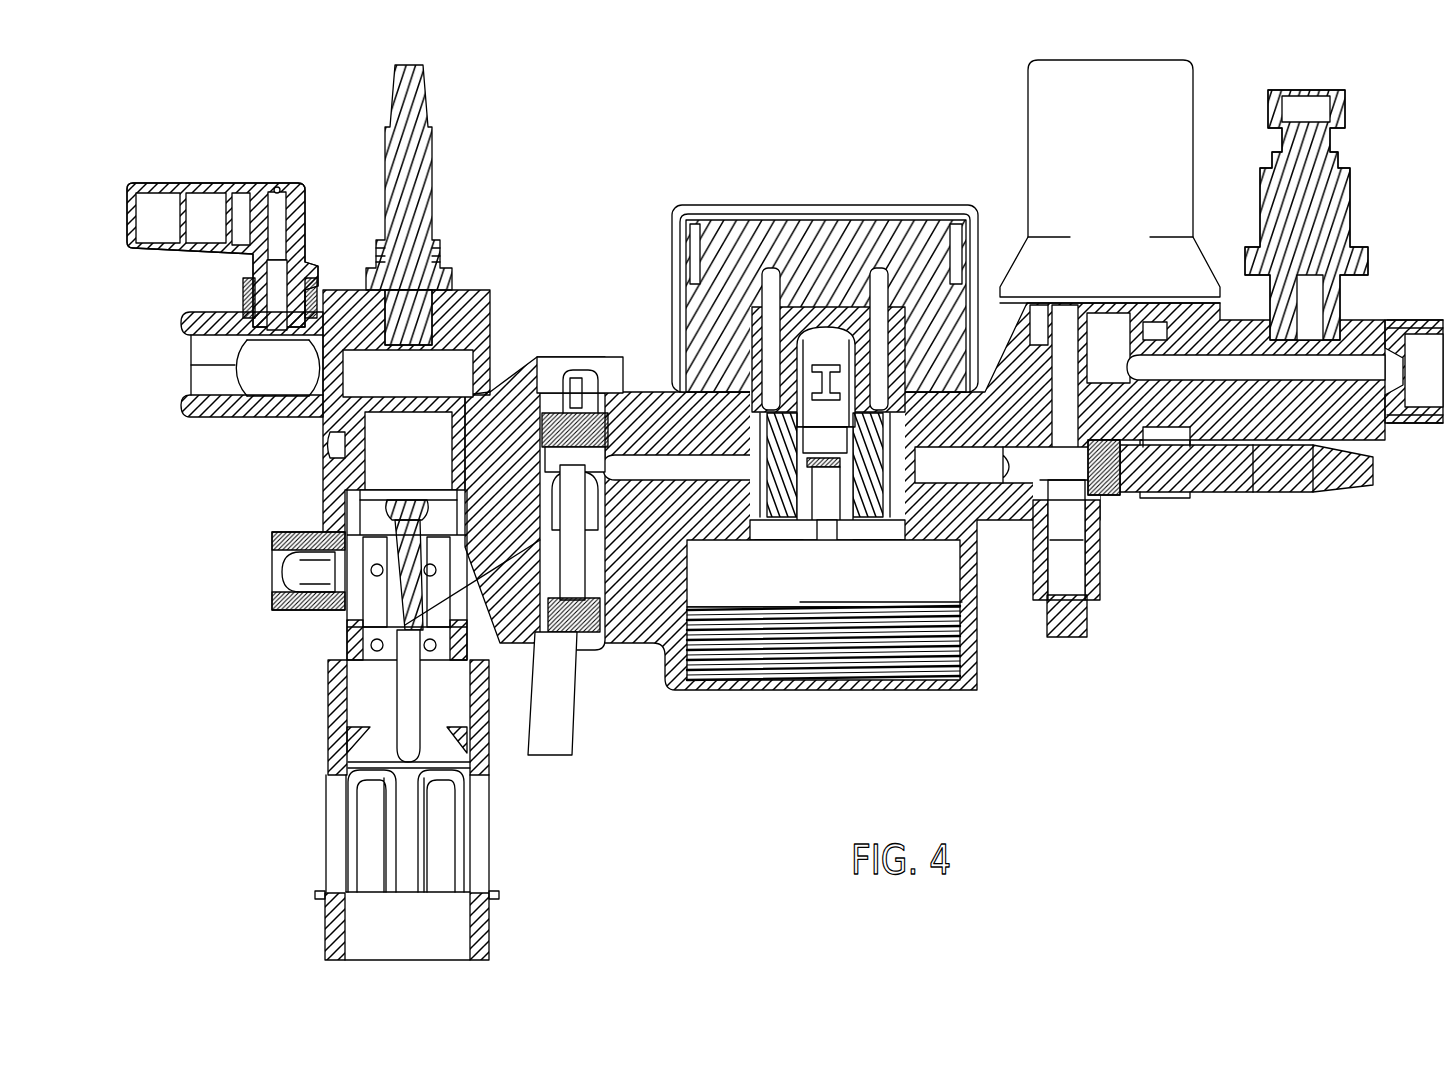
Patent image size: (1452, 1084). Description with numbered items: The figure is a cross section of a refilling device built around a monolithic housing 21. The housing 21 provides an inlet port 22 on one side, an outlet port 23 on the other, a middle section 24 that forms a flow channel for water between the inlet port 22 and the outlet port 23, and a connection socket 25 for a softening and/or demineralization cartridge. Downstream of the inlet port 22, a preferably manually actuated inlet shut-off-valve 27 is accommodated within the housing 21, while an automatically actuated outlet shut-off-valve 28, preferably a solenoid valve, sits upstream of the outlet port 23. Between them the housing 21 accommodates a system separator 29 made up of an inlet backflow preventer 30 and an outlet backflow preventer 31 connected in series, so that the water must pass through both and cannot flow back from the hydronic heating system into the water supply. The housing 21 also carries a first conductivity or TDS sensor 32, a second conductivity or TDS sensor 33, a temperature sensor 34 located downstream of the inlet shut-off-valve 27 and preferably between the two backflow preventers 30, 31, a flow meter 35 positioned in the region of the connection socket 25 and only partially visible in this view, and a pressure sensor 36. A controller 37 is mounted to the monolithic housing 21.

The monolithic housing 21 is at (647, 382).
The inlet port 22 is at (216, 412).
The outlet port 23 is at (1425, 425).
The middle section 24 is at (645, 492).
The connection socket 25 is at (980, 660).
The inlet shut-off-valve 27 is at (237, 152).
The automatically actuated outlet shut-off-valve 28 is at (1206, 70).
The system separator 29 is at (257, 663).
The inlet backflow preventer 30 is at (375, 572).
The outlet backflow preventer 31 is at (380, 636).
The first conductivity or TDS sensor 32 is at (420, 156).
The second conductivity or TDS sensor 33 is at (1280, 482).
The temperature sensor 34 is at (552, 742).
The flow meter 35 is at (842, 298).
The pressure sensor 36 is at (1362, 158).
The controller 37 is at (716, 198).